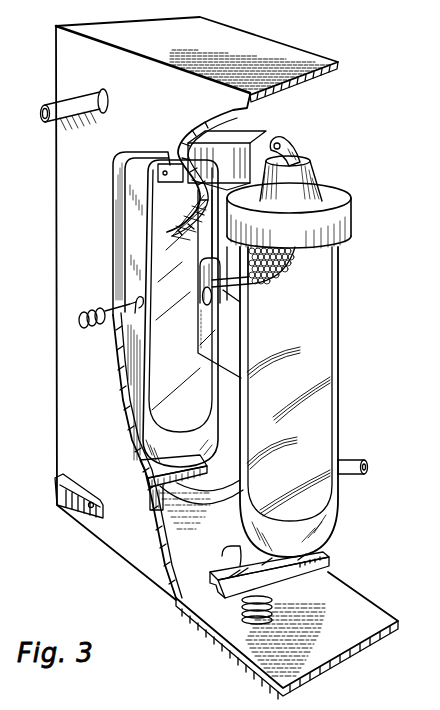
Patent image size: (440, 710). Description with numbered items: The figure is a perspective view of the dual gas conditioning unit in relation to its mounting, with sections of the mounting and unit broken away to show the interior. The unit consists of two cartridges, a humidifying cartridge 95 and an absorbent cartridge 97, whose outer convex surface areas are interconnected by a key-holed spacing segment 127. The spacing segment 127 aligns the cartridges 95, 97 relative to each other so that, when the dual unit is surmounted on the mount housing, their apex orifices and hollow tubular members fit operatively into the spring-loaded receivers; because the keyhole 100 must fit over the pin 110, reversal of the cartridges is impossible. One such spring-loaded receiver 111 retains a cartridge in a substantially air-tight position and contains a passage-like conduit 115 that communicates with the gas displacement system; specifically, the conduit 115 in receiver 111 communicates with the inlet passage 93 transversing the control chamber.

The inlet passage 93 is at (38, 110).
The humidifying cartridge 95 is at (210, 452).
The absorbent cartridge 97 is at (339, 382).
The keyhole 100 is at (216, 306).
The pin 110 is at (248, 282).
The spring-loaded receiver 111 is at (353, 205).
The conduit 115 is at (298, 151).
The key-holed spacing segment 127 is at (224, 344).